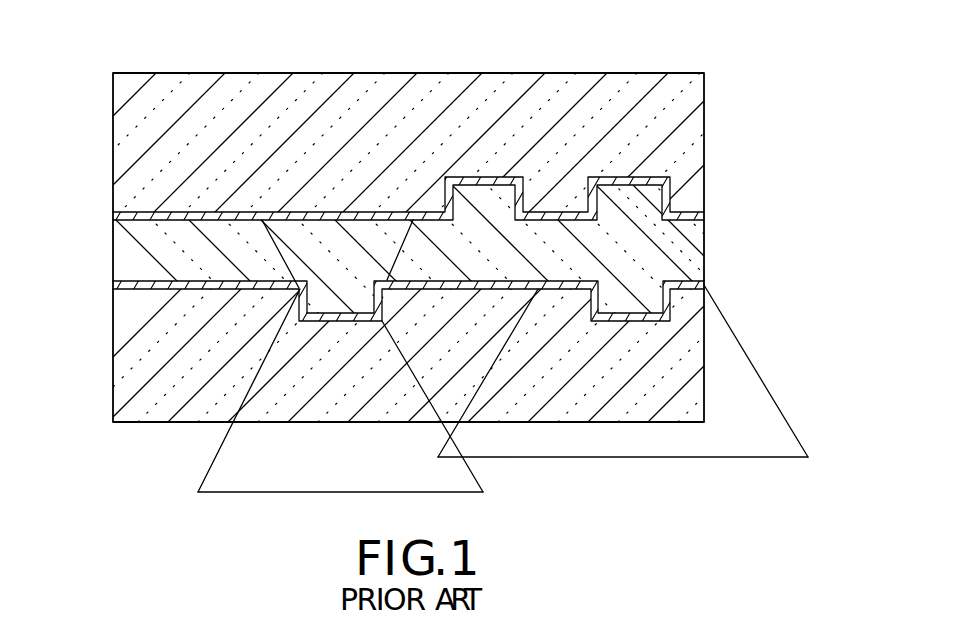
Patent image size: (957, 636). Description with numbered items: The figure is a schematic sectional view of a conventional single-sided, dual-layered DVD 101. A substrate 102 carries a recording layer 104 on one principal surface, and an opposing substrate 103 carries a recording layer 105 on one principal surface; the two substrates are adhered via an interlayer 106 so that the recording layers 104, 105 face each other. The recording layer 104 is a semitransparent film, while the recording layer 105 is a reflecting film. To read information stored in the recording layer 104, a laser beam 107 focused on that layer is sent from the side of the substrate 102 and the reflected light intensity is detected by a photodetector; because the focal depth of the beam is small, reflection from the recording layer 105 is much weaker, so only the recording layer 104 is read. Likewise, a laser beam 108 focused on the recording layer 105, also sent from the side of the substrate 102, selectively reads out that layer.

The single-sided, dual-layered DVD 101 is at (725, 72).
The substrate 102 is at (113, 372).
The opposing substrate 103 is at (113, 112).
The recording layer 104 is at (125, 292).
The recording layer 105 is at (125, 213).
The interlayer 106 is at (125, 252).
The laser beam 107 is at (200, 458).
The laser beam 108 is at (787, 417).